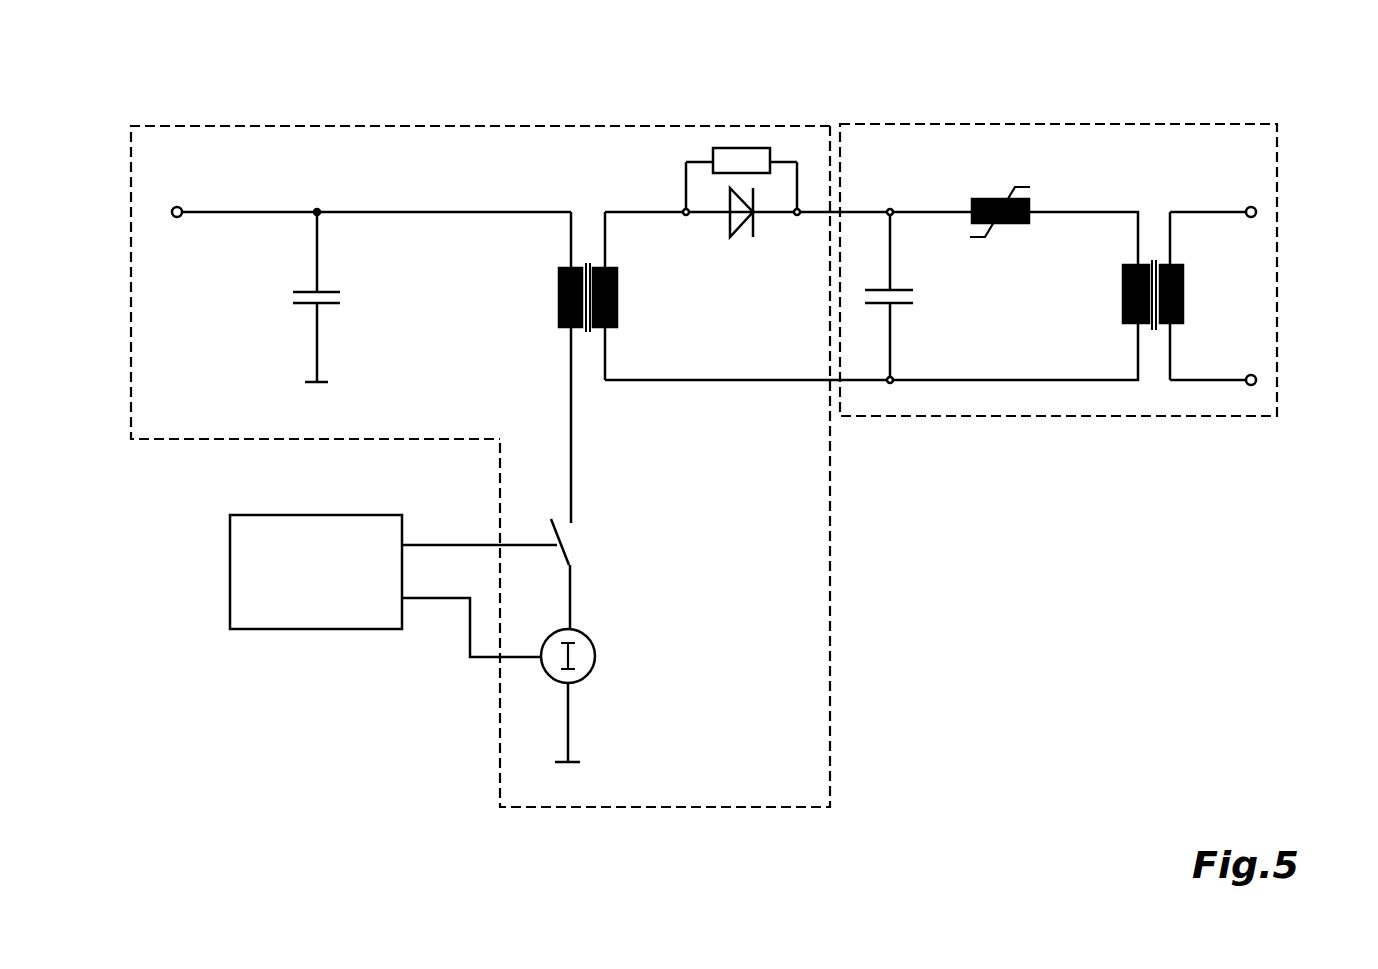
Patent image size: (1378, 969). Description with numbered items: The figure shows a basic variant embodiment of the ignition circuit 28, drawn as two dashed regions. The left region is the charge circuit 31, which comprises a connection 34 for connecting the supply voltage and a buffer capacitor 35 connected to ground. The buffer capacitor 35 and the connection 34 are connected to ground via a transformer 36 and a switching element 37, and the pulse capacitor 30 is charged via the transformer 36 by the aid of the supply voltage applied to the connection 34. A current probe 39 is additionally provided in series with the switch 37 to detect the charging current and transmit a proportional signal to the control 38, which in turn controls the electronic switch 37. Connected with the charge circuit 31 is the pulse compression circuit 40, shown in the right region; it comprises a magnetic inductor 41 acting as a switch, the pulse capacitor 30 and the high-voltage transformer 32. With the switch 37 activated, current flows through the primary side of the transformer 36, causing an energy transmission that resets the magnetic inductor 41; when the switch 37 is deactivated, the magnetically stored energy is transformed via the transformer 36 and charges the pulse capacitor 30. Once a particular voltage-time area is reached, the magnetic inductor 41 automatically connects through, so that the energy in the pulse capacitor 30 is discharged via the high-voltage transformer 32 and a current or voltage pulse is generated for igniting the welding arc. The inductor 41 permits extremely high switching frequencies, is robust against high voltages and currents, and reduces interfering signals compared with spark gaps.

The ignition circuit 28 is at (1143, 600).
The pulse capacitor 30 is at (920, 322).
The charge circuit 31 is at (772, 623).
The high-voltage transformer 32 is at (1223, 289).
The connection 34 is at (158, 180).
The buffer capacitor 35 is at (277, 313).
The transformer 36 is at (530, 302).
The switching element 37 is at (590, 545).
The control 38 is at (296, 592).
The current probe 39 is at (578, 657).
The pulse compression circuit 40 is at (1185, 155).
The magnetic inductor 41 is at (968, 178).